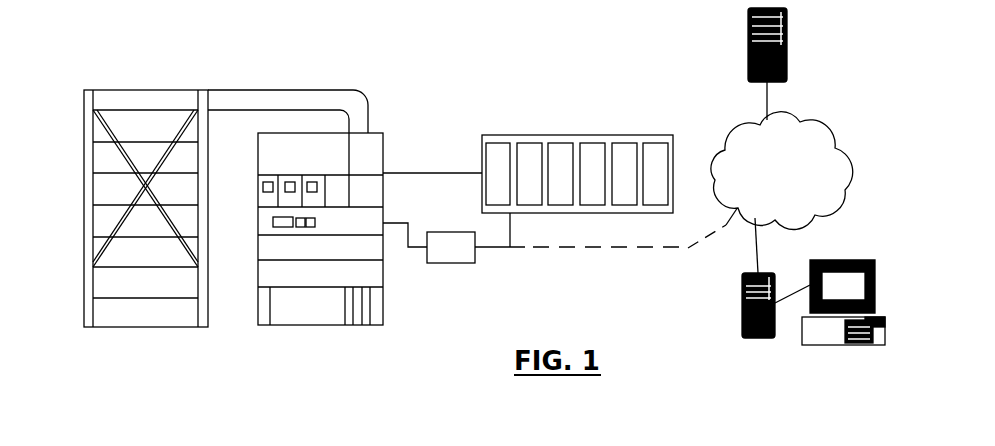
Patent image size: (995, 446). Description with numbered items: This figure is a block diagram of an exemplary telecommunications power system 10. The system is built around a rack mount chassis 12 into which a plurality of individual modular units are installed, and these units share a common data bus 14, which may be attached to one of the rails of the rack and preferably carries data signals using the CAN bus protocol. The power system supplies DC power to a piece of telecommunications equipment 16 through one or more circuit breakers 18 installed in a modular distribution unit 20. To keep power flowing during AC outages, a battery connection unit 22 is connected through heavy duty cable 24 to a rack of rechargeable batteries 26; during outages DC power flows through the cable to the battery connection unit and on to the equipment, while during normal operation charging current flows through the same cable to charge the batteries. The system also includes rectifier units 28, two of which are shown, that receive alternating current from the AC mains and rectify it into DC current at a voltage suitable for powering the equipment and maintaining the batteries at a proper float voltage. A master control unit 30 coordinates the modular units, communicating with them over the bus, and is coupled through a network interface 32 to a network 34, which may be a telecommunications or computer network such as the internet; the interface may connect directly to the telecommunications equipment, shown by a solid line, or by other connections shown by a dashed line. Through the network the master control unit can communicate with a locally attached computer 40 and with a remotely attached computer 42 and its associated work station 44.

The telecommunications power system 10 is at (431, 104).
The rack mount chassis 12 is at (258, 318).
The data bus 14 is at (368, 305).
The telecommunications equipment 16 is at (577, 135).
The circuit breakers 18 is at (322, 173).
The modular distribution unit 20 is at (258, 198).
The battery connection unit 22 is at (258, 145).
The heavy duty cable 24 is at (290, 88).
The rack of rechargeable batteries 26 is at (110, 200).
The rectifier units 28 is at (258, 273).
The master control unit 30 is at (381, 216).
The network interface 32 is at (458, 264).
The network 34 is at (843, 188).
The computer 40 is at (788, 44).
The computer 42 is at (758, 341).
The work station 44 is at (842, 347).